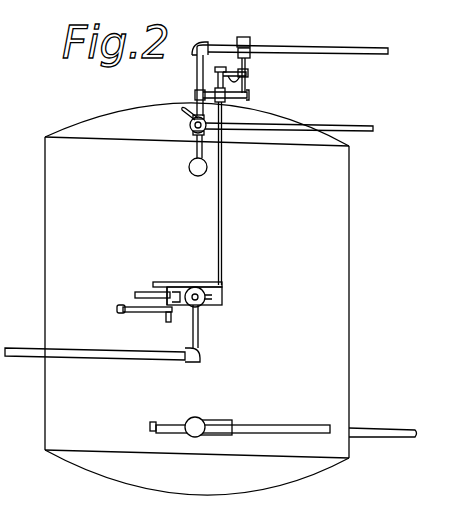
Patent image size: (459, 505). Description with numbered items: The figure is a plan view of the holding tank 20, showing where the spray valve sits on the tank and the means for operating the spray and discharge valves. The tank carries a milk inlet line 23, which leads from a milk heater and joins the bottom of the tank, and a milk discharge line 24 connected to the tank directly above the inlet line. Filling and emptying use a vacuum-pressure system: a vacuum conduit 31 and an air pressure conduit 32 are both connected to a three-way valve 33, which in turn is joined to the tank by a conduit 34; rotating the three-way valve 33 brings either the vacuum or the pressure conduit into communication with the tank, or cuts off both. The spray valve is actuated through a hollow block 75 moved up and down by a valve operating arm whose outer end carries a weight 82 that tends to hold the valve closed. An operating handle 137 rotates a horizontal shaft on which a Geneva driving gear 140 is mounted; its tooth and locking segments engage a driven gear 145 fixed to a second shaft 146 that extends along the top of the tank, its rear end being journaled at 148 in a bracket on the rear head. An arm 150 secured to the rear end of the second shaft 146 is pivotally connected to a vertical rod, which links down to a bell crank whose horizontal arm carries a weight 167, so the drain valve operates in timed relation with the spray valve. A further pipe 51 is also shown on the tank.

The holding tank 20 is at (347, 312).
The milk inlet line 23 is at (388, 431).
The milk discharge line 24 is at (283, 420).
The vacuum conduit 31 is at (310, 47).
The air pressure conduit 32 is at (322, 118).
The three-way valve 33 is at (190, 126).
The conduit 34 is at (188, 158).
The pipe 51 is at (118, 362).
The hollow block 75 is at (198, 307).
The weight 82 is at (143, 294).
The operating handle 137 is at (128, 316).
The Geneva driving gear 140 is at (157, 281).
The driven gear 145 is at (199, 281).
The second shaft 146 is at (222, 258).
The journal 148 is at (248, 103).
The arm 150 is at (238, 80).
The weight 167 is at (234, 23).